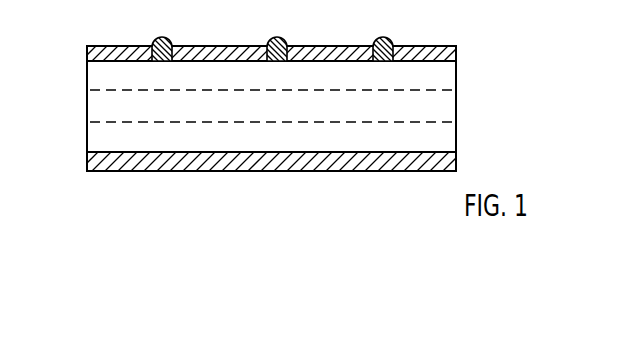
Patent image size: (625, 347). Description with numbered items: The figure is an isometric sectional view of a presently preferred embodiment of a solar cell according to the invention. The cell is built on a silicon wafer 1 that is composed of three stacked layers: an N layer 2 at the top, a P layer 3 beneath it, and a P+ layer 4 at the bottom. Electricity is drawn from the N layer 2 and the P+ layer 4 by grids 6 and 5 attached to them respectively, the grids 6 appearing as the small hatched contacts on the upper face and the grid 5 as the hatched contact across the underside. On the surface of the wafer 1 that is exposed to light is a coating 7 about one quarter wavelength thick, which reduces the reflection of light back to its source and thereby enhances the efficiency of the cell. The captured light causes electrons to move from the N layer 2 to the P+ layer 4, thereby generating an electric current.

The silicon wafer 1 is at (87, 80).
The N layer 2 is at (443, 75).
The P layer 3 is at (445, 109).
The P+ layer 4 is at (443, 140).
The grid 5 is at (311, 168).
The grid 6 is at (165, 38).
The coating 7 is at (423, 46).